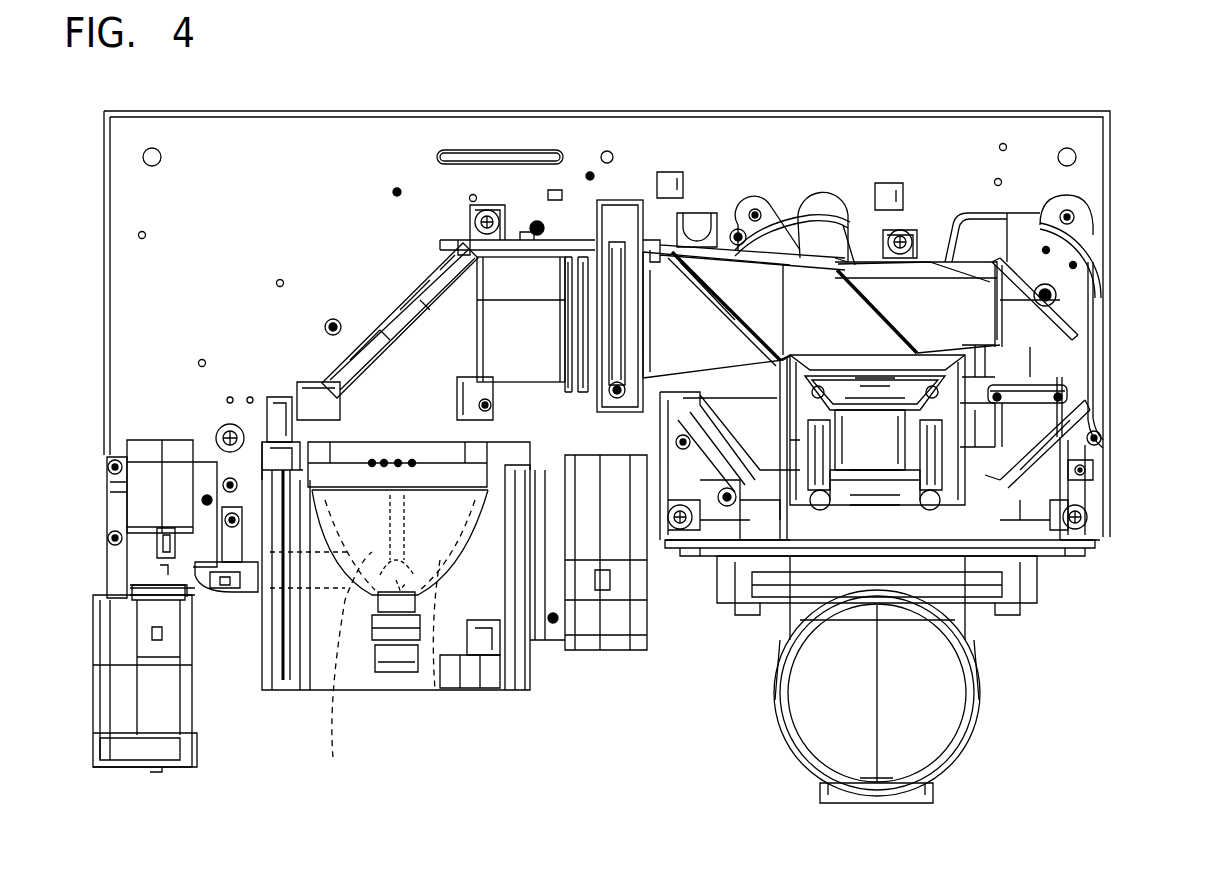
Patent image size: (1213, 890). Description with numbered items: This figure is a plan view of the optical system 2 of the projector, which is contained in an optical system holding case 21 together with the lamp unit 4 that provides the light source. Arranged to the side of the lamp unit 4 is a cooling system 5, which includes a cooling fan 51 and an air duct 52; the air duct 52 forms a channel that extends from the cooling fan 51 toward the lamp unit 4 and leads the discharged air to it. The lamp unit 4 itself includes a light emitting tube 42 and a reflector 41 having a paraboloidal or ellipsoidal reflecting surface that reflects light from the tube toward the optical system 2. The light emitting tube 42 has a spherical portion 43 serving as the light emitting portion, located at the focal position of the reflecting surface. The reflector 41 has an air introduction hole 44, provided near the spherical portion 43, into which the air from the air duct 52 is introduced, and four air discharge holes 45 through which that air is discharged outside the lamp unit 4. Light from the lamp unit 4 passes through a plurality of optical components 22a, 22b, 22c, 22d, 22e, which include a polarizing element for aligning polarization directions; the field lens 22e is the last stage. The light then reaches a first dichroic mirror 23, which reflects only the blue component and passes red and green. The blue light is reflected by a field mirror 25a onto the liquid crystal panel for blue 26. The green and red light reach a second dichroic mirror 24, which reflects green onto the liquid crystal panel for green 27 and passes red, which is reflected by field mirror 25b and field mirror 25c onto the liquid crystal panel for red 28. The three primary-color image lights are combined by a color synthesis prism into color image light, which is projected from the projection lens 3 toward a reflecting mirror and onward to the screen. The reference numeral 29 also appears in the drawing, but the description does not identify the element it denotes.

The optical system 2 is at (731, 283).
The projection lens 3 is at (927, 697).
The lamp unit 4 is at (505, 690).
The cooling system 5 is at (364, 780).
The optical system holding case 21 is at (717, 158).
The optical component 22a is at (494, 292).
The optical component 22b is at (562, 337).
The optical component 22c is at (583, 258).
The optical component 22d is at (600, 292).
The field lens 22e is at (628, 337).
The first dichroic mirror 23 is at (738, 322).
The second dichroic mirror 24 is at (905, 352).
The field mirror 25a is at (717, 503).
The field mirror 25b is at (1040, 332).
The field mirror 25c is at (1103, 440).
The liquid crystal panel for blue 26 is at (780, 358).
The liquid crystal panel for green 27 is at (870, 372).
The liquid crystal panel for red 28 is at (1060, 520).
The lens mount base 29 is at (1003, 545).
The reflector 41 is at (340, 560).
The light emitting tube 42 is at (461, 693).
The spherical portion 43 is at (423, 693).
The air introduction hole 44 is at (372, 590).
The air discharge holes 45 is at (398, 460).
The cooling fan 51 is at (158, 693).
The air duct 52 is at (384, 670).